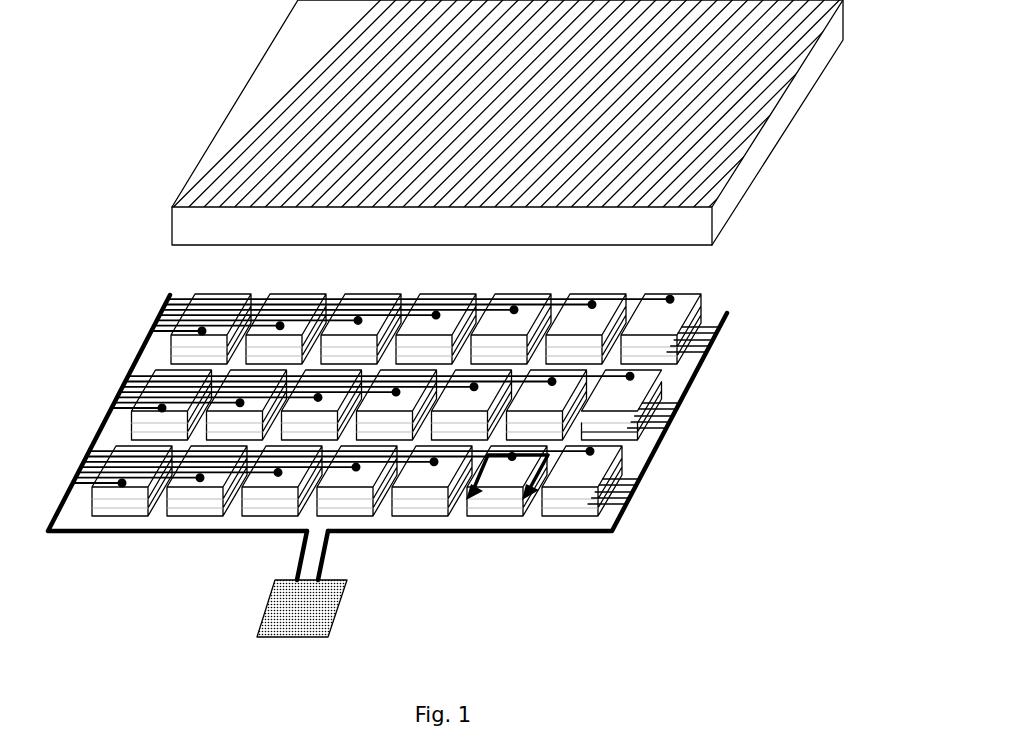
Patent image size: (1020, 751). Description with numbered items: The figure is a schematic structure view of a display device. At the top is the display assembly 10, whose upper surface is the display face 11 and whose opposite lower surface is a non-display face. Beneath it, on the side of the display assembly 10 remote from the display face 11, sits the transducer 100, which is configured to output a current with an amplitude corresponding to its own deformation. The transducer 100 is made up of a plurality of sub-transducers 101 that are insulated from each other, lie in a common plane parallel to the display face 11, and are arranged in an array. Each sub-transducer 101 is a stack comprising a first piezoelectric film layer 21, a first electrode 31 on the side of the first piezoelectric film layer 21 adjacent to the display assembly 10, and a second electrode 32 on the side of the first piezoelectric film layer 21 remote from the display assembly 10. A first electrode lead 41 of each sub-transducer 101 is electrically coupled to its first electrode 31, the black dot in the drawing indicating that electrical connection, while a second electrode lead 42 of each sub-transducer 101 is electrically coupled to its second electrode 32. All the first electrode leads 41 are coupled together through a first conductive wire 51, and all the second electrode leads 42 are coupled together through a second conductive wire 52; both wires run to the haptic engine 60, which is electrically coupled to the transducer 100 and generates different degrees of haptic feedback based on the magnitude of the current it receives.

The display assembly 10 is at (582, 122).
The display face 11 is at (260, 135).
The transducer 100 is at (426, 389).
The sub-transducer 101 is at (693, 411).
The first electrode 31 is at (655, 390).
The first piezoelectric film layer 21 is at (655, 408).
The second electrode 32 is at (655, 424).
The first electrode lead 41 is at (122, 406).
The second electrode lead 42 is at (654, 428).
The first conductive wire 51 is at (190, 533).
The second conductive wire 52 is at (532, 535).
The haptic engine 60 is at (305, 608).